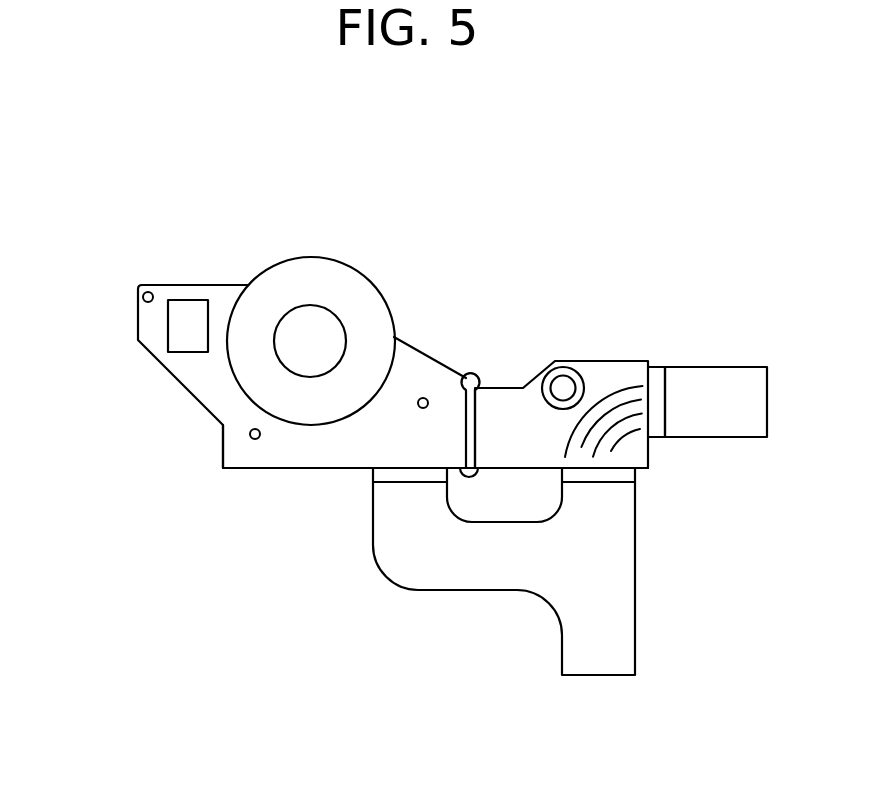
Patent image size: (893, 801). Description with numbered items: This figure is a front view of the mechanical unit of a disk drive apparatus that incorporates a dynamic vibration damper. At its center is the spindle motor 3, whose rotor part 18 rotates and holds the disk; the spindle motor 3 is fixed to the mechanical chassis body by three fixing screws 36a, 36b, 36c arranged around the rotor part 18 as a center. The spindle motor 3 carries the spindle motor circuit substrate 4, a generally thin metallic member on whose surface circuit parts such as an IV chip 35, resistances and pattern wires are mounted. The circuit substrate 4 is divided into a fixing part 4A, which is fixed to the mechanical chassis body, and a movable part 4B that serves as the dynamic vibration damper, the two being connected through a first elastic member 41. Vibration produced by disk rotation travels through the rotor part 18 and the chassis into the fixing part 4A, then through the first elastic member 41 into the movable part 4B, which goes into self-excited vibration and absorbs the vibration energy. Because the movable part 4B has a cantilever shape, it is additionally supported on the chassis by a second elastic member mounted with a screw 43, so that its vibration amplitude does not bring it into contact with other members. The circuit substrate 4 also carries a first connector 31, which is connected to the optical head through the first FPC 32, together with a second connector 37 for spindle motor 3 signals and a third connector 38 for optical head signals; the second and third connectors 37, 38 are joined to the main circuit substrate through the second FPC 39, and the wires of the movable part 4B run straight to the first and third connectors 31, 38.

The spindle motor 3 is at (254, 251).
The rotor part 18 is at (318, 257).
The IV chip 35 is at (175, 333).
The fixing screw 36a is at (142, 296).
The fixing screw 36b is at (250, 435).
The fixing screw 36c is at (423, 397).
The spindle motor circuit substrate 4 is at (329, 494).
The fixing part 4A is at (285, 449).
The movable part 4B is at (626, 450).
The first elastic member 41 is at (470, 373).
The screw 43 is at (563, 382).
The first connector 31 is at (654, 377).
The first FPC 32 is at (725, 378).
The second connector 37 is at (415, 470).
The third connector 38 is at (588, 468).
The second FPC 39 is at (615, 628).